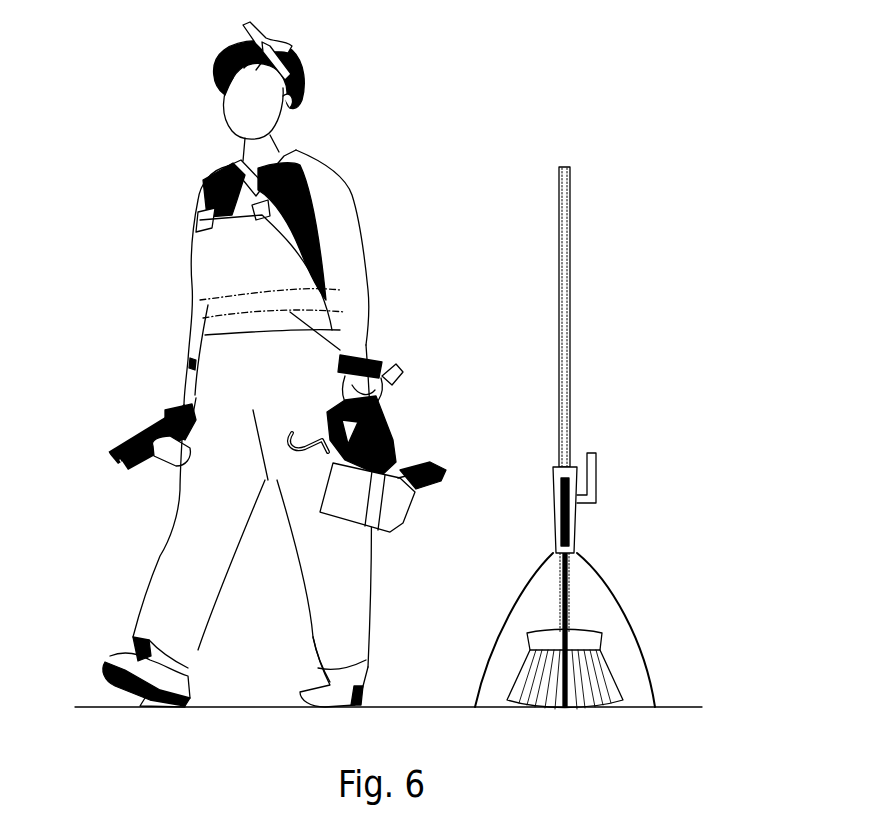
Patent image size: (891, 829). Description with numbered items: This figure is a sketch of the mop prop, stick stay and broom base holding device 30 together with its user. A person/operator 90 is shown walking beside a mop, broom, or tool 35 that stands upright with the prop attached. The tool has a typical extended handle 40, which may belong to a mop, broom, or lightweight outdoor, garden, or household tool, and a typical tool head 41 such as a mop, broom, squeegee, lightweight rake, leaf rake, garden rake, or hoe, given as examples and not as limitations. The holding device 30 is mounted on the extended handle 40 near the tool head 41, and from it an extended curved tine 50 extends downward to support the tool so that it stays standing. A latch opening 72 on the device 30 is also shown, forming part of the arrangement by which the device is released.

The person/operator 90 is at (193, 482).
The extended handle 40 is at (567, 352).
The mop prop, stick stay and broom base holding device 30 is at (528, 533).
The latch opening 72 is at (597, 483).
The extended curved tine 50 is at (623, 613).
The tool head 41 is at (540, 670).
The mop, broom, or tool with prop attached 35 is at (722, 643).